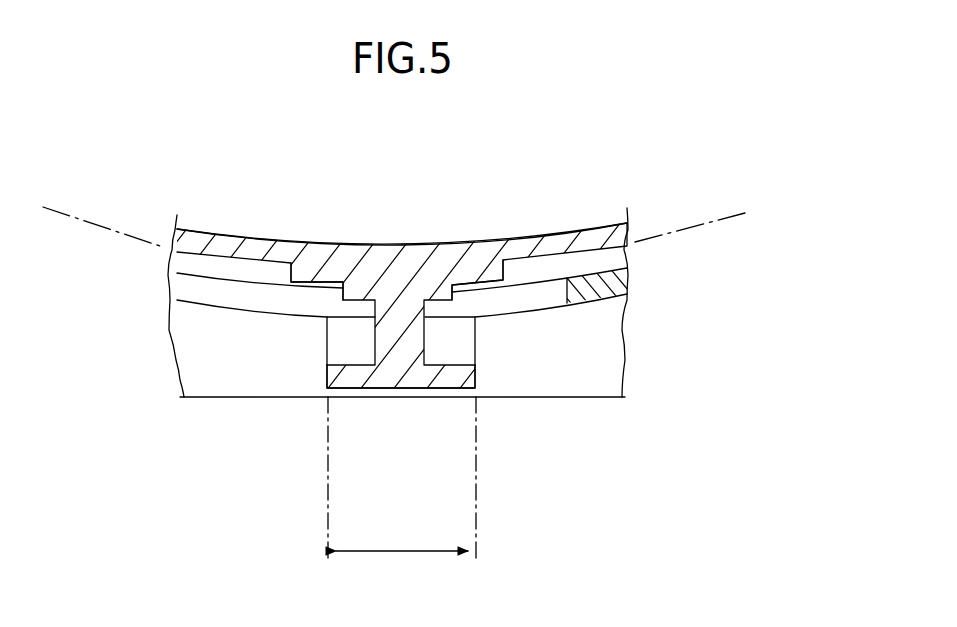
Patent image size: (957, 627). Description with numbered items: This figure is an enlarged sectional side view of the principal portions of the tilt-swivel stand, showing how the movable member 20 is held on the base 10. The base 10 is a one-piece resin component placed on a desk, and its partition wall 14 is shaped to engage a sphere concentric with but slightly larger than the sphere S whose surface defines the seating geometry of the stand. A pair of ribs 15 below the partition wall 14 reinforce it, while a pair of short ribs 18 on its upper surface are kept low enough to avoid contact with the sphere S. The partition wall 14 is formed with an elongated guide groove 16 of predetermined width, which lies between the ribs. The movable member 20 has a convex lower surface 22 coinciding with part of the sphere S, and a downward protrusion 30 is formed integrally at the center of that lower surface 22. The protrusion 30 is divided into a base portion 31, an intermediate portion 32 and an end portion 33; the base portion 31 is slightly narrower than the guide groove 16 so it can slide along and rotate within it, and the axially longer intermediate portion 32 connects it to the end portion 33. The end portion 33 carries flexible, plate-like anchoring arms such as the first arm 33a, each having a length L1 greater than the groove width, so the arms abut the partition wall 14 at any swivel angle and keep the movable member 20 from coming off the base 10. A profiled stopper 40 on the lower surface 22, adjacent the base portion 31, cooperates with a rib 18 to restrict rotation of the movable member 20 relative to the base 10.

The base 10 is at (486, 407).
The partition wall 14 is at (202, 307).
The ribs 15 is at (555, 375).
The guide groove 16 is at (540, 292).
The ribs 18 is at (228, 272).
The movable member 20 is at (545, 228).
The lower surface 22 is at (583, 258).
The protrusion 30 is at (390, 392).
The base portion 31 is at (343, 282).
The intermediate portion 32 is at (373, 335).
The end portion 33 is at (344, 391).
The first anchoring arm 33a is at (443, 348).
The stopper 40 is at (283, 262).
The sphere S is at (717, 223).
The length of anchoring arm L1 is at (402, 478).